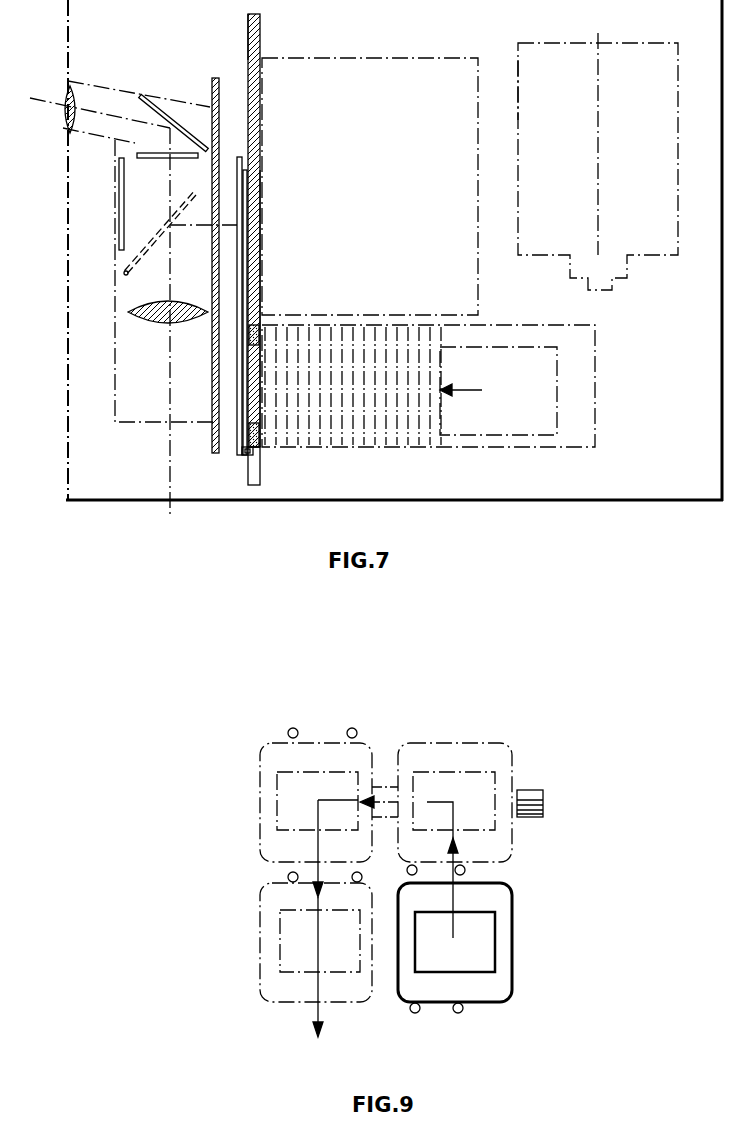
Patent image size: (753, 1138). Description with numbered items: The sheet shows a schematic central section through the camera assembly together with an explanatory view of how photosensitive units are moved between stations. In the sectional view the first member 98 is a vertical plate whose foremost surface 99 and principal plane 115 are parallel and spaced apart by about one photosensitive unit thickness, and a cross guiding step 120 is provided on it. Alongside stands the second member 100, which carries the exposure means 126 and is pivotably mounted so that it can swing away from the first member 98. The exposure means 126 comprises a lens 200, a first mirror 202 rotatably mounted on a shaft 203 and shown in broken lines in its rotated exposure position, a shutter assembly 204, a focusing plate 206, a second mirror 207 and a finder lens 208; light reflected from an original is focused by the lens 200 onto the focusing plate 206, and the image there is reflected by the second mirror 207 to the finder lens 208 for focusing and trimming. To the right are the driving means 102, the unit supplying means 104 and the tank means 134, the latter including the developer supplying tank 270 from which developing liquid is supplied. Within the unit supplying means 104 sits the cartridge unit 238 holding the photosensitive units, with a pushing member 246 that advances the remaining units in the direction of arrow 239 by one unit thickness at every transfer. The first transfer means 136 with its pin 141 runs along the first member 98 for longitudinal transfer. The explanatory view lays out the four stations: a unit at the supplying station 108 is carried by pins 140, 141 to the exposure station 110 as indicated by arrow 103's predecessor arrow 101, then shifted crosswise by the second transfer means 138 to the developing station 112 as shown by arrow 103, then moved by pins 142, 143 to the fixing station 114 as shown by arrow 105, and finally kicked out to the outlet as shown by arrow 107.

In FIG. 7, the first member 98 is at (262, 49).
In FIG. 7, the foremost surface 99 is at (247, 57).
In FIG. 7, the second member 100 is at (215, 76).
In FIG. 7, the driving means 102 is at (382, 140).
In FIG. 7, the unit supplying means 104 is at (333, 486).
In FIG. 7, the principal plane 115 is at (260, 200).
In FIG. 7, the cross guiding step 120 is at (249, 167).
In FIG. 7, the exposure means 126 is at (115, 320).
In FIG. 7, the tank means 134 is at (657, 187).
In FIG. 7, the first transfer means 136 is at (234, 292).
In FIG. 7, the pin 141 is at (241, 455).
In FIG. 9, the pin 141 is at (458, 1013).
In FIG. 7, the lens 200 is at (153, 328).
In FIG. 7, the first mirror 202 is at (126, 178).
In FIG. 7, the shaft 203 is at (127, 275).
In FIG. 7, the shutter assembly 204 is at (207, 229).
In FIG. 7, the focusing plate 206 is at (160, 153).
In FIG. 7, the second mirror 207 is at (175, 118).
In FIG. 7, the finder lens 208 is at (75, 101).
In FIG. 7, the cartridge unit 238 is at (596, 344).
In FIG. 7, the arrow 239 is at (475, 390).
In FIG. 7, the pushing member 246 is at (496, 434).
In FIG. 7, the developer supplying tank 270 is at (520, 140).
In FIG. 9, the arrow 101 is at (458, 848).
In FIG. 9, the arrow 103 is at (358, 795).
In FIG. 9, the arrow 105 is at (322, 898).
In FIG. 9, the arrow 107 is at (323, 1028).
In FIG. 9, the supplying station 108 is at (449, 943).
In FIG. 9, the exposure station 110 is at (458, 799).
In FIG. 9, the developing station 112 is at (308, 797).
In FIG. 9, the fixing station 114 is at (309, 943).
In FIG. 9, the second transfer means 138 is at (532, 817).
In FIG. 9, the pin 140 is at (414, 1013).
In FIG. 9, the pin 142 is at (288, 877).
In FIG. 9, the pin 143 is at (363, 857).